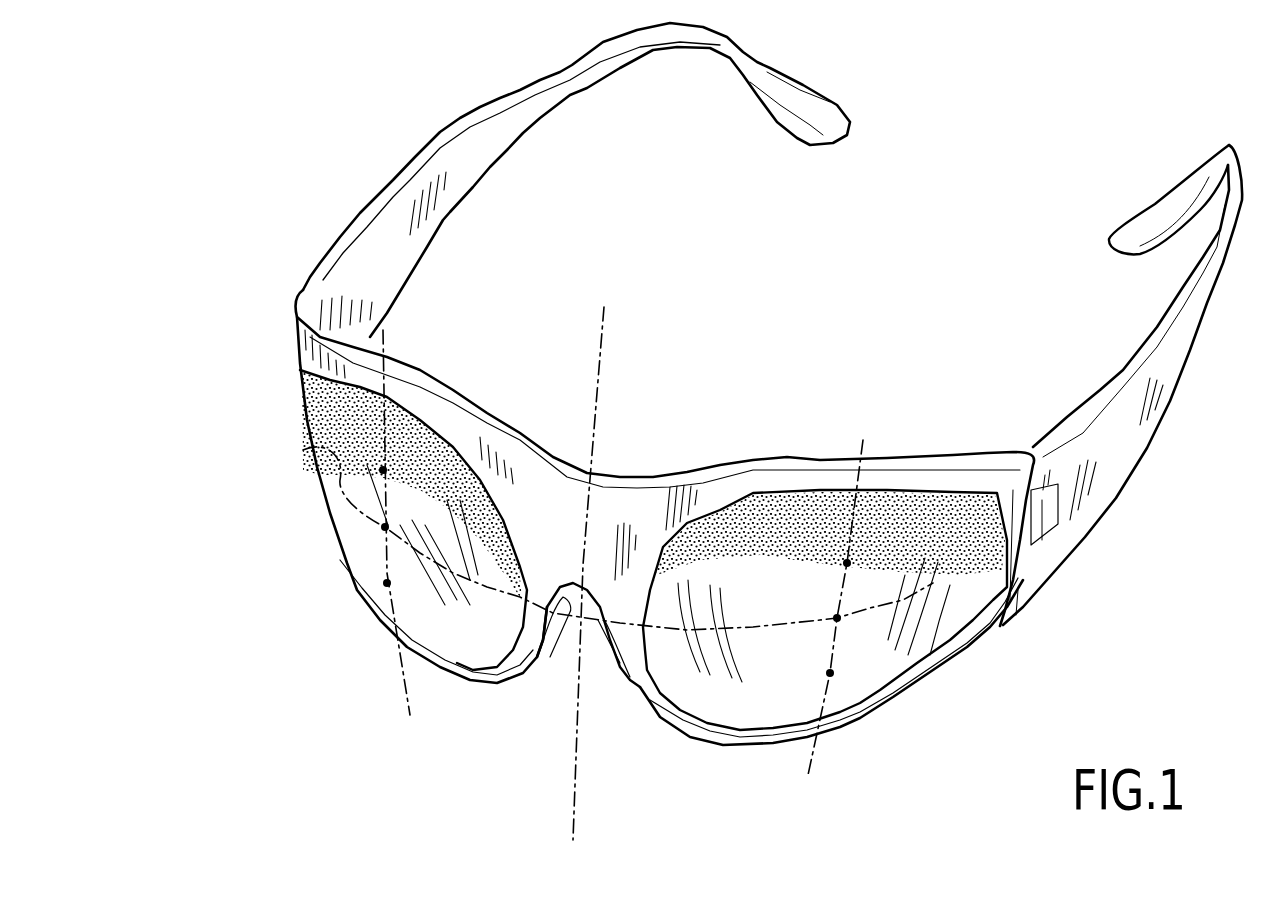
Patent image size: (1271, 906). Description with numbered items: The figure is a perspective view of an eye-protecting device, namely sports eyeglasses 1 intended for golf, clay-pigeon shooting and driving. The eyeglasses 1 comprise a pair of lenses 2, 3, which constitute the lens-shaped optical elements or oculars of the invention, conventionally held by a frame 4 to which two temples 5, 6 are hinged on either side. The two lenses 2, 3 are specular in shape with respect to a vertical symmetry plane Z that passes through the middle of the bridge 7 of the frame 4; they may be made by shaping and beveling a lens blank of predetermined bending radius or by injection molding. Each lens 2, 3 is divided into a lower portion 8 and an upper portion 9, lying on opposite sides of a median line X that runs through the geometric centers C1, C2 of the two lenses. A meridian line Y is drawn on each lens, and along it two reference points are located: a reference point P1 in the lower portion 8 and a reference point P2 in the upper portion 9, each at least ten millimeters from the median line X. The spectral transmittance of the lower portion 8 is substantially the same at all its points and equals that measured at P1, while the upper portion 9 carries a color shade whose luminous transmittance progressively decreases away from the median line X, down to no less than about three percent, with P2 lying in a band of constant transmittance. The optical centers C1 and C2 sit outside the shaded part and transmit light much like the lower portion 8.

The eyeglasses 1 is at (272, 207).
The lens 2 is at (880, 675).
The lens 3 is at (333, 582).
The frame 4 is at (747, 460).
The temple 5 is at (1120, 372).
The temple 6 is at (497, 133).
The bridge 7 is at (610, 497).
The lower portion 8 is at (460, 637).
The upper portion 9 is at (440, 445).
The median line X is at (303, 450).
The meridian line Y is at (385, 330).
The vertical symmetry plane Z is at (606, 320).
The reference point P1 is at (830, 673).
The reference point P2 is at (847, 563).
The geometric center C1 is at (837, 618).
The geometric center C2 is at (385, 527).